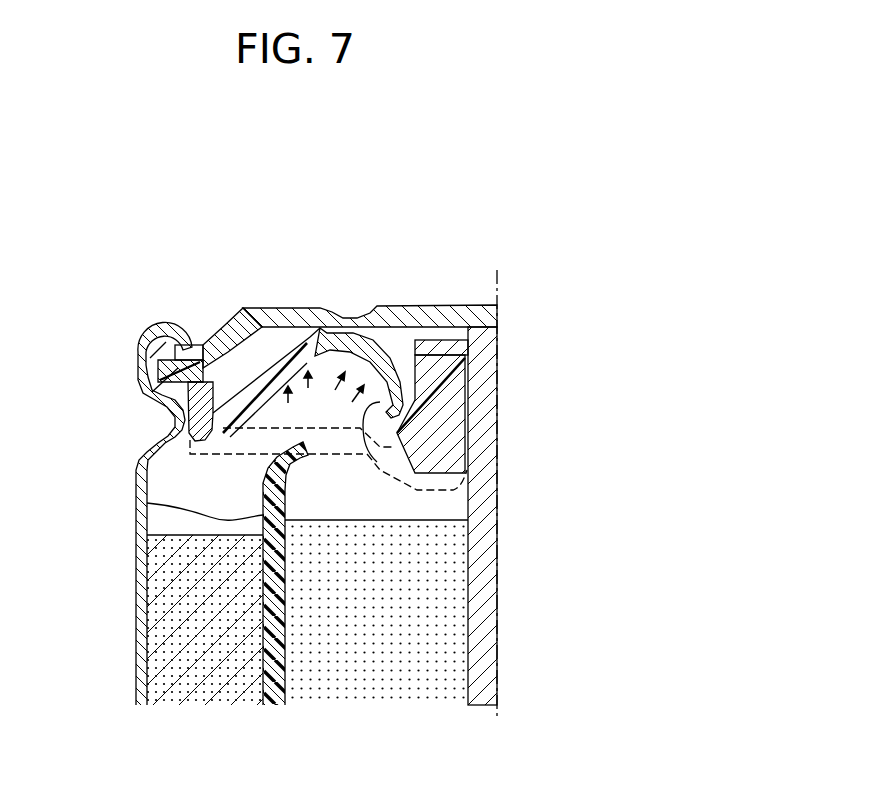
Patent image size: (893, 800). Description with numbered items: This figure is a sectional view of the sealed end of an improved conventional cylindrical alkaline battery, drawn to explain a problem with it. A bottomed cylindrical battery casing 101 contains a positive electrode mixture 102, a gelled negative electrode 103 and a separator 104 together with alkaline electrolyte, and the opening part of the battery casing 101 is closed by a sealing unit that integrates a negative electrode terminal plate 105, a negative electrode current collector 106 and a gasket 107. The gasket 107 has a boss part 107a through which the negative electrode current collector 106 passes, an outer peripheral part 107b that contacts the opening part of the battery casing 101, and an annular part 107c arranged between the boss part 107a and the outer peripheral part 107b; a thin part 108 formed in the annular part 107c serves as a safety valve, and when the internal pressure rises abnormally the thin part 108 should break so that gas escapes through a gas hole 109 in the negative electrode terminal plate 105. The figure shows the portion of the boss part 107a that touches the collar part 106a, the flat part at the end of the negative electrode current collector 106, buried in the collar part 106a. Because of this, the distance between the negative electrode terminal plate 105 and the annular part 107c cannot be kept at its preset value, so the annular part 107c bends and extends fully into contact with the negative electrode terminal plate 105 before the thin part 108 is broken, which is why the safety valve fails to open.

The battery casing 101 is at (135, 467).
The positive electrode mixture 102 is at (148, 620).
The gelled negative electrode 103 is at (445, 653).
The separator 104 is at (150, 503).
The negative electrode terminal plate 105 is at (486, 306).
The negative electrode current collector 106 is at (488, 587).
The collar part 106a is at (441, 340).
The gasket 107 is at (423, 177).
The boss part 107a is at (428, 380).
The outer peripheral part 107b is at (175, 385).
The annular part 107c is at (320, 350).
The thin part 108 is at (363, 458).
The gas hole 109 is at (238, 333).